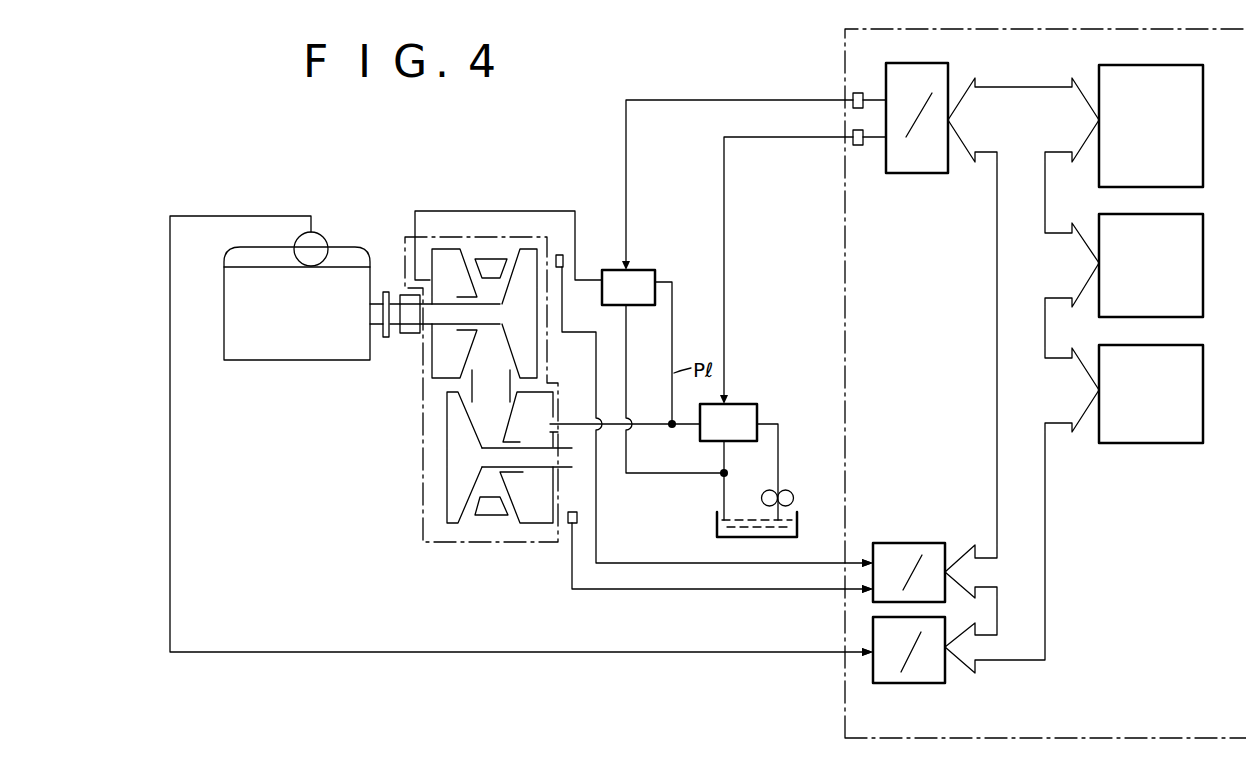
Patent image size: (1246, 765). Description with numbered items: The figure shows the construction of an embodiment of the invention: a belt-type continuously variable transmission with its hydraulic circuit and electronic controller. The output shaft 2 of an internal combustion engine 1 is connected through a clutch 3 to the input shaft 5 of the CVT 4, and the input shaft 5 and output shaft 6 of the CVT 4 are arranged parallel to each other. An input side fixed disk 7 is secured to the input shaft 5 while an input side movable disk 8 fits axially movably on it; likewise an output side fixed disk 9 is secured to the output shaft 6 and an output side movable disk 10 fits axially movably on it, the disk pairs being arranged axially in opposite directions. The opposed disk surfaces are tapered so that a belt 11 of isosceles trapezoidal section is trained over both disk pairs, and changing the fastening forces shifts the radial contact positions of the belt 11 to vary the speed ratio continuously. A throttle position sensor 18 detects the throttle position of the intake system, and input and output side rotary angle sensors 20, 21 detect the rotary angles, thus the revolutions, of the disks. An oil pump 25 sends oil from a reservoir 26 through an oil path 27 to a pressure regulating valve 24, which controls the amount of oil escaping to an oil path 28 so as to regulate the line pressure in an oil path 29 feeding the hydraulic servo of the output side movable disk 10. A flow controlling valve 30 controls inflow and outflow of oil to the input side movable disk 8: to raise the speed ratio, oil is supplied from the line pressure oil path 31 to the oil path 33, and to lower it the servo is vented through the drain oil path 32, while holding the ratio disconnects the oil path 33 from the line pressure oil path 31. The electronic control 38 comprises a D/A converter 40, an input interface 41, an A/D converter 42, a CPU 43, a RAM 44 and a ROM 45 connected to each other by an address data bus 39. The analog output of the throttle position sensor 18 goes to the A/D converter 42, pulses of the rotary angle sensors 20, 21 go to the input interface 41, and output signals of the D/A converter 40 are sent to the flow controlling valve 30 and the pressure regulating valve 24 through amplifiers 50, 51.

The internal combustion engine 1 is at (302, 368).
The output shaft 2 is at (379, 302).
The clutch 3 is at (388, 339).
The CVT 4 is at (483, 549).
The input shaft 5 is at (406, 299).
The output shaft 6 is at (565, 457).
The input side fixed disk 7 is at (535, 262).
The input side movable disk 8 is at (443, 262).
The output side fixed disk 9 is at (458, 512).
The output side movable disk 10 is at (540, 404).
The belt 11 is at (490, 268).
The throttle position sensor 18 is at (303, 238).
The input side rotary angle sensor 20 is at (563, 269).
The output side rotary angle sensor 21 is at (580, 517).
The pressure regulating valve 24 is at (752, 415).
The oil pump 25 is at (785, 490).
The reservoir 26 is at (797, 525).
The oil path 27 is at (783, 431).
The oil path 28 is at (722, 470).
The oil path 29 is at (657, 428).
The flow controlling valve 30 is at (644, 276).
The line pressure oil path 31 is at (674, 330).
The drain oil path 32 is at (628, 384).
The oil path 33 is at (528, 210).
The electronic control 38 is at (1017, 25).
The address data bus 39 is at (1017, 341).
The D/A converter 40 is at (915, 163).
The input interface 41 is at (910, 548).
The A/D converter 42 is at (945, 675).
The CPU 43 is at (1187, 88).
The RAM 44 is at (1183, 243).
The ROM 45 is at (1183, 373).
The amplifier 50 is at (856, 91).
The amplifier 51 is at (854, 146).